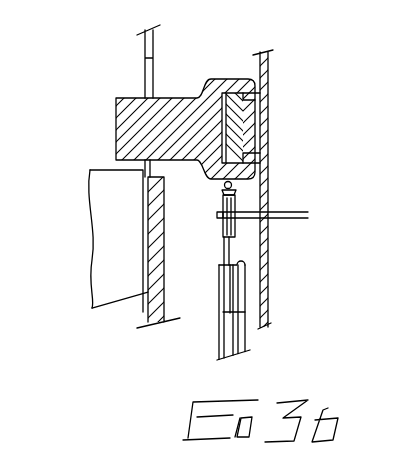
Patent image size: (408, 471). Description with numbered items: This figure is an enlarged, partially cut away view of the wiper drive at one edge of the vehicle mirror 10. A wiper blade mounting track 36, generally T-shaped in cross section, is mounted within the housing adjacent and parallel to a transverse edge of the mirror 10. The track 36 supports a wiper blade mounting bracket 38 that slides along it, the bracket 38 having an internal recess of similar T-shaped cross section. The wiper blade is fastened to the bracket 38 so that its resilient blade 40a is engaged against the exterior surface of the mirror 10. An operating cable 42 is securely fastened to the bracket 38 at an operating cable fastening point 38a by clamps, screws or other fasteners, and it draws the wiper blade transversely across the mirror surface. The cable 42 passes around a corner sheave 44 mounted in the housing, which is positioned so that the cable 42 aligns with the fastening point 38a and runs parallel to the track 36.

The vehicle mirror 10 is at (150, 309).
The wiper blade mounting track 36 is at (270, 115).
The wiper blade mounting bracket 38 is at (118, 100).
The operating cable fastening point 38a is at (260, 186).
The resilient blade 40a is at (115, 248).
The operating cable 42 is at (227, 248).
The corner sheave 44 is at (244, 204).